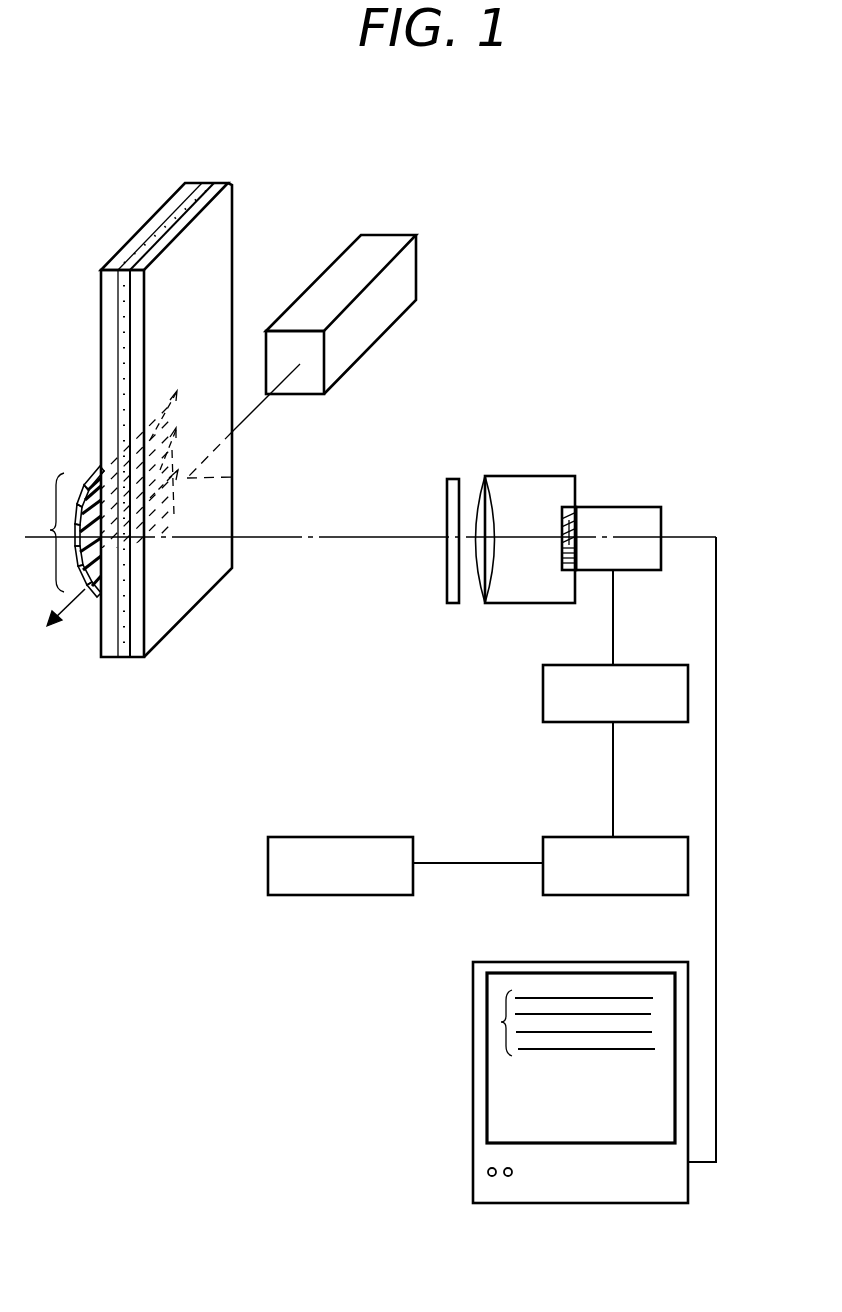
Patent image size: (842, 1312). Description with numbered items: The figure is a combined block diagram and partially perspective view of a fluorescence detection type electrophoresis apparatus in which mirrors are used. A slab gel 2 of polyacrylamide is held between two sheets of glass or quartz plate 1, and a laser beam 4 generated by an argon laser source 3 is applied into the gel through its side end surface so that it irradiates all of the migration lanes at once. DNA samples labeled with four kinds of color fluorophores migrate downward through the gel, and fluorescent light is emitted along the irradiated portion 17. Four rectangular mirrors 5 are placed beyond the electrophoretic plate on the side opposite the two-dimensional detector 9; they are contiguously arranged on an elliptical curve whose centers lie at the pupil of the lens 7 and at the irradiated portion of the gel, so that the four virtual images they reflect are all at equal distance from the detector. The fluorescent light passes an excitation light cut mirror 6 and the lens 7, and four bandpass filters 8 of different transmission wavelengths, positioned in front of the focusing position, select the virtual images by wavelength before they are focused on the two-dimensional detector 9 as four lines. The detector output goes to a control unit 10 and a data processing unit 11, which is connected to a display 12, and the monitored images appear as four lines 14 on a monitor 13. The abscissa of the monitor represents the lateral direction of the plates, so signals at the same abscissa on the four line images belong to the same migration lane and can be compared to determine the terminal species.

The glass plate or quartz plate 1 is at (226, 185).
The slab gel 2 is at (198, 185).
The argon laser source 3 is at (394, 238).
The laser beam 4 is at (253, 411).
The rectangular mirrors 5 is at (88, 480).
The excitation light cut mirror 6 is at (449, 479).
The lens 7 is at (483, 485).
The bandpass filters 8 is at (570, 506).
The two-dimensional detector 9 is at (641, 512).
The control unit 10 is at (665, 675).
The data processing unit 11 is at (665, 845).
The display 12 is at (386, 845).
The monitor 13 is at (504, 1095).
The four lines 14 is at (498, 1022).
The irradiated portion 17 is at (236, 478).